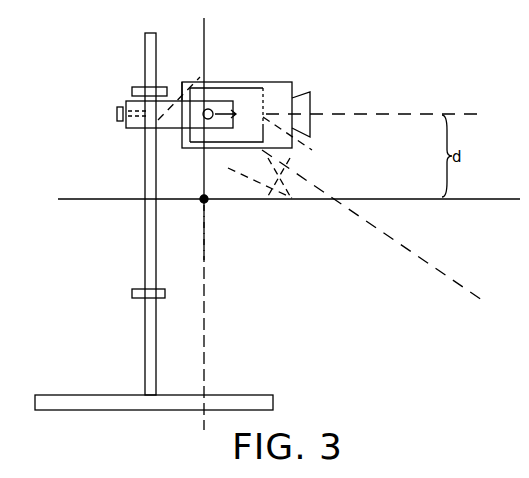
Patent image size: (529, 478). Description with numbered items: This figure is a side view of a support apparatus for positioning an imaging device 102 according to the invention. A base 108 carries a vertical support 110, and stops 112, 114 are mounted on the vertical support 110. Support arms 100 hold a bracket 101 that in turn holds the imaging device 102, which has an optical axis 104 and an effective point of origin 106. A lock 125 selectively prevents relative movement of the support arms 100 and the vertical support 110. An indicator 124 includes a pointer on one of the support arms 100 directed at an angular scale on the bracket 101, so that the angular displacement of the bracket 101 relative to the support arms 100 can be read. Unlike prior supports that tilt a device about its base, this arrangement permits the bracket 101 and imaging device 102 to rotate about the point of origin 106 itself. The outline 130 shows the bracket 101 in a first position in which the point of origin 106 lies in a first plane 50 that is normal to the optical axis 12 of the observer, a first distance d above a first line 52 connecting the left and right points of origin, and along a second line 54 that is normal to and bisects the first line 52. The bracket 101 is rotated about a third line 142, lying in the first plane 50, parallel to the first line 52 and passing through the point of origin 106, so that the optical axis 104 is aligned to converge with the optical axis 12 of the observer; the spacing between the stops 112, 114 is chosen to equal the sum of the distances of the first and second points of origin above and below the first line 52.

The optical axis of the observer 12 is at (393, 198).
The first plane 50 is at (247, 285).
The first line 52 is at (208, 202).
The second line 54 is at (204, 242).
The support arms 100 is at (138, 128).
The bracket 101 is at (233, 126).
The imaging device 102 is at (279, 80).
The optical axis 104 is at (343, 112).
The effective point of origin 106 is at (205, 128).
The base 108 is at (217, 393).
The vertical support 110 is at (157, 333).
The stop 112 is at (132, 91).
The stop 114 is at (132, 293).
The indicator 124 is at (213, 81).
The lock 125 is at (117, 109).
The outline 130 is at (300, 166).
The third line 142 is at (193, 77).